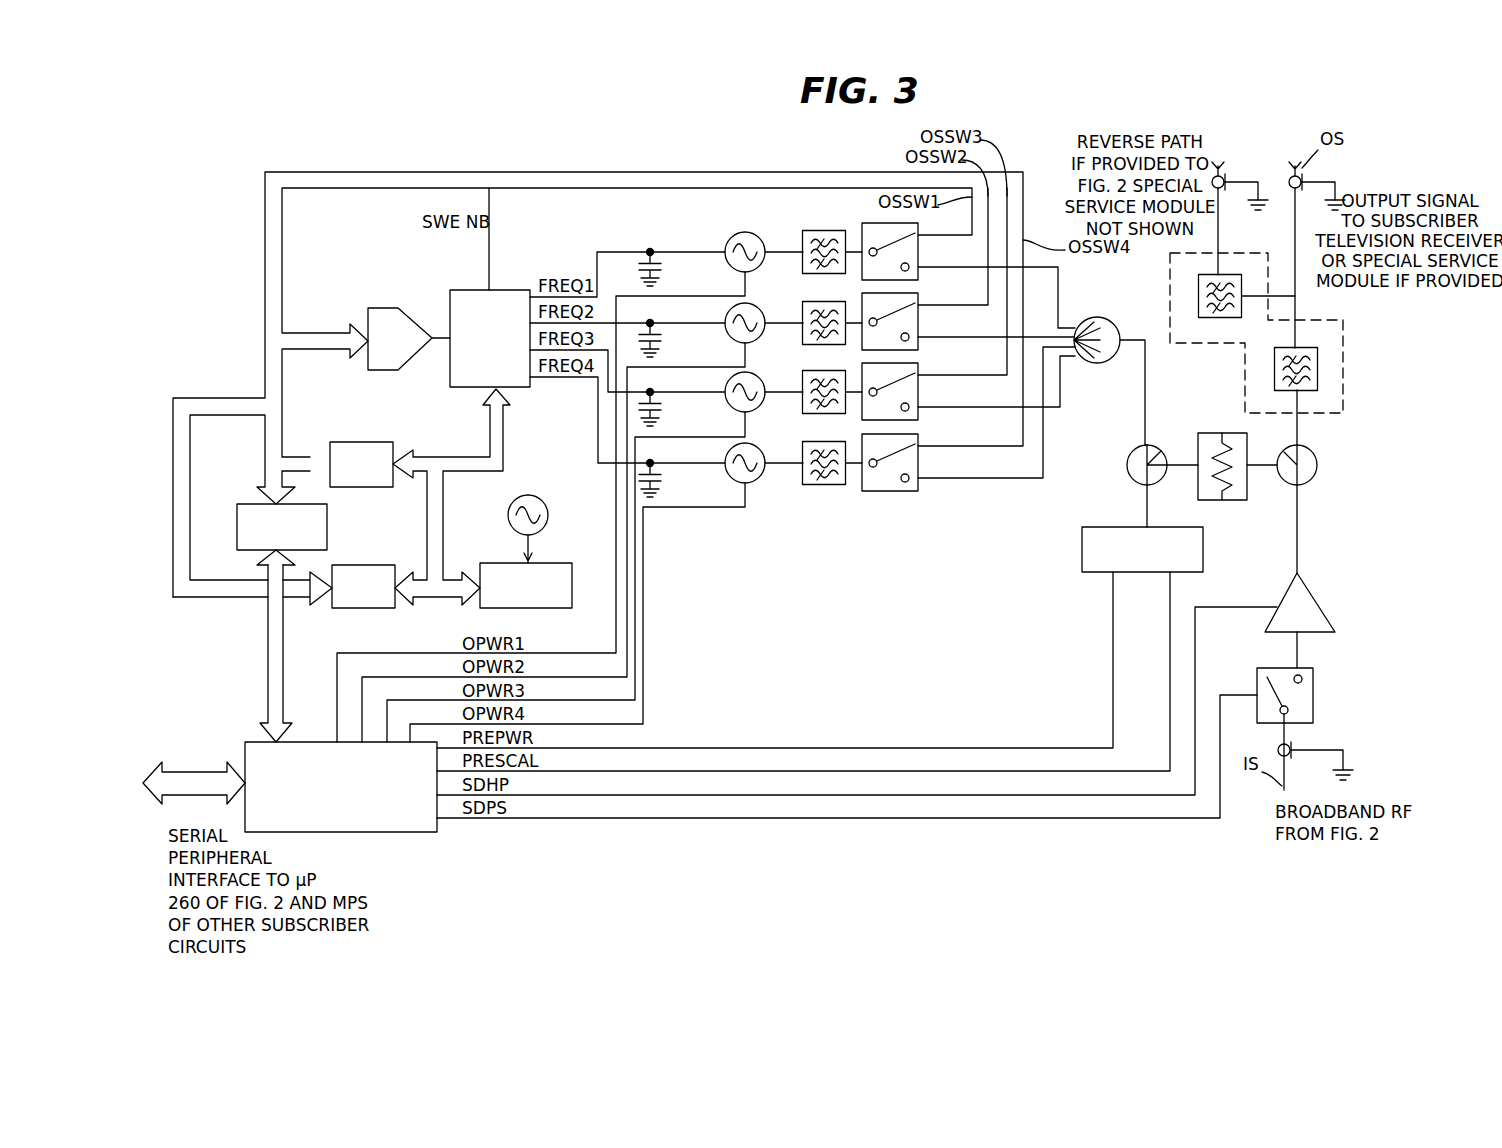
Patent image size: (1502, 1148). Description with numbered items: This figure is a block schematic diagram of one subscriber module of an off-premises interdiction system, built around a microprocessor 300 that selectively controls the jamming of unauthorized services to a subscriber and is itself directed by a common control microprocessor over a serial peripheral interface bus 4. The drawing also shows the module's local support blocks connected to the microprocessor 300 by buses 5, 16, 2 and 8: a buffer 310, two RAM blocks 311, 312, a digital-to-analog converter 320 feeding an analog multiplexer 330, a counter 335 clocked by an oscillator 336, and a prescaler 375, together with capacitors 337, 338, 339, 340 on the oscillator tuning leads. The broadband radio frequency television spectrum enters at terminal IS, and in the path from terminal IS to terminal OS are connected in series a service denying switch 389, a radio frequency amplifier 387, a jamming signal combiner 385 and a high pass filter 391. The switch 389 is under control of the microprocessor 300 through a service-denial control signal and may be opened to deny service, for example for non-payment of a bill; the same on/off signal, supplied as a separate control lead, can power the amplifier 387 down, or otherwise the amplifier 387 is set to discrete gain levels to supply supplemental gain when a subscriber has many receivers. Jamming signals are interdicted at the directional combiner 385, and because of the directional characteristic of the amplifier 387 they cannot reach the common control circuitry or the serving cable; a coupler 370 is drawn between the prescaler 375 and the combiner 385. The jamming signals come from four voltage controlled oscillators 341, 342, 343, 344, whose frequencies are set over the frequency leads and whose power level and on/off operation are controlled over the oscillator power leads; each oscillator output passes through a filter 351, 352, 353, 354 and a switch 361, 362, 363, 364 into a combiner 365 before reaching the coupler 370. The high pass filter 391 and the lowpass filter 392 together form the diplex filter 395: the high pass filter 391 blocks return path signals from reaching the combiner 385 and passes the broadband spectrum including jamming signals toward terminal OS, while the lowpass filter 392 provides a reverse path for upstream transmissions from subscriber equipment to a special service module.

The data bus 2 is at (480, 442).
The serial peripheral interface bus 4 is at (185, 798).
The address bus 5 is at (257, 278).
The microprocessor bus 8 is at (262, 688).
The data bus 16 is at (262, 387).
The microprocessor 300 is at (400, 832).
The buffer 310 is at (247, 503).
The RAM 311 is at (347, 442).
The RAM 312 is at (347, 565).
The D/A converter 320 is at (385, 308).
The analog multiplexer 330 is at (473, 290).
The counter 335 is at (553, 563).
The clock oscillator 336 is at (521, 498).
The capacitor 337 is at (636, 263).
The capacitor 338 is at (664, 338).
The capacitor 339 is at (664, 408).
The capacitor 340 is at (663, 482).
The voltage controlled oscillator 341 is at (737, 270).
The voltage controlled oscillator 342 is at (737, 341).
The voltage controlled oscillator 343 is at (737, 411).
The voltage controlled oscillator 344 is at (737, 482).
The bandpass filter 351 is at (812, 232).
The bandpass filter 352 is at (812, 301).
The bandpass filter 353 is at (812, 370).
The bandpass filter 354 is at (812, 442).
The output switch 361 is at (918, 247).
The output switch 362 is at (918, 317).
The output switch 363 is at (918, 387).
The output switch 364 is at (918, 458).
The signal combiner 365 is at (1091, 318).
The directional coupler 370 is at (1137, 485).
The prescaler 375 is at (1082, 547).
The jamming signal combiner 385 is at (1310, 483).
The radio frequency amplifier 387 is at (1318, 598).
The service denying switch 389 is at (1313, 695).
The high pass filter 391 is at (1318, 363).
The lowpass filter 392 is at (1221, 318).
The diplex filter 395 is at (1343, 410).